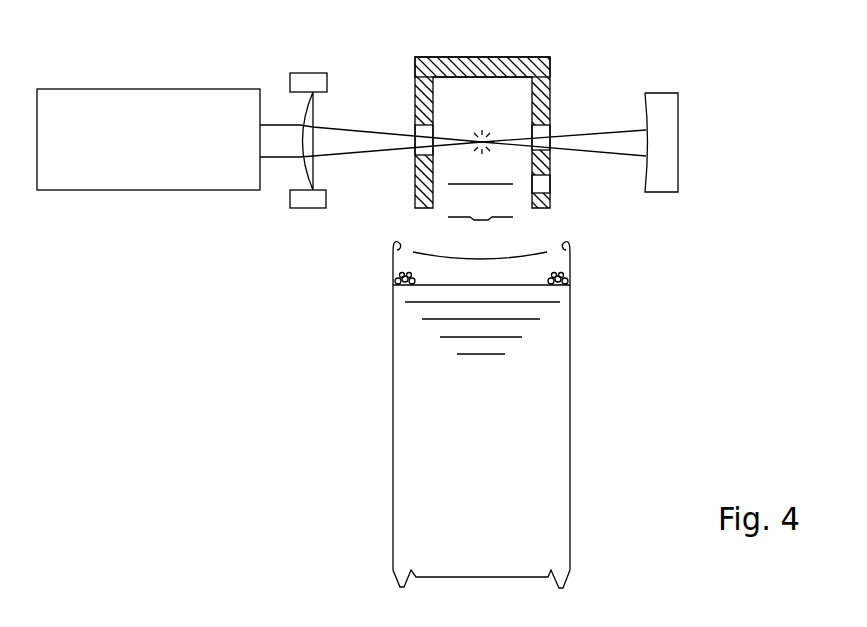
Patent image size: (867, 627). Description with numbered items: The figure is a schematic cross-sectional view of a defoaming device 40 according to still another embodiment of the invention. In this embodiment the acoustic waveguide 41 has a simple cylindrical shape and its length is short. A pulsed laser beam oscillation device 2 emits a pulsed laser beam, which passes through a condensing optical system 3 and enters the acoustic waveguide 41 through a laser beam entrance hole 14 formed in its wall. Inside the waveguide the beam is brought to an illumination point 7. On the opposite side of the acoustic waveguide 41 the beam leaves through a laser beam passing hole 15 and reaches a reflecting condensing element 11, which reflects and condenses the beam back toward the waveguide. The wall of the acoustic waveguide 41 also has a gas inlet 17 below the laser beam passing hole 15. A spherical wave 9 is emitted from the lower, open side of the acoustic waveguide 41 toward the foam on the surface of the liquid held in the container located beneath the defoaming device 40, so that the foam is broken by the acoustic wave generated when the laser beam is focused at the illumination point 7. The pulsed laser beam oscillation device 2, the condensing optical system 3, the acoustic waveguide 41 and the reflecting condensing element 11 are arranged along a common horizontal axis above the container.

The pulsed laser beam oscillation device 2 is at (105, 190).
The condensing optical system 3 is at (300, 209).
The defoaming device 40 is at (573, 72).
The acoustic waveguide 41 is at (458, 59).
The laser beam entrance hole 14 is at (420, 155).
The laser beam passing hole 15 is at (548, 130).
The gas inlet 17 is at (549, 185).
The illumination point 7 is at (480, 137).
The reflecting condensing element 11 is at (665, 194).
The spherical wave 9 is at (457, 221).